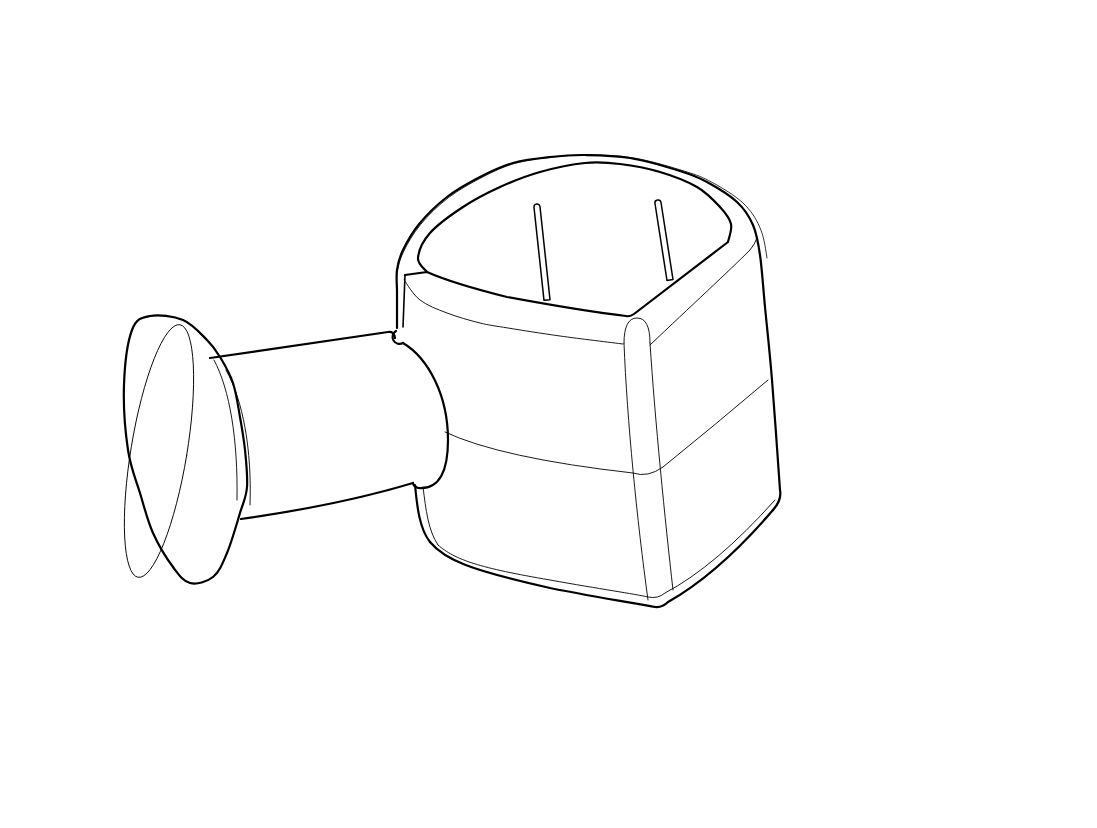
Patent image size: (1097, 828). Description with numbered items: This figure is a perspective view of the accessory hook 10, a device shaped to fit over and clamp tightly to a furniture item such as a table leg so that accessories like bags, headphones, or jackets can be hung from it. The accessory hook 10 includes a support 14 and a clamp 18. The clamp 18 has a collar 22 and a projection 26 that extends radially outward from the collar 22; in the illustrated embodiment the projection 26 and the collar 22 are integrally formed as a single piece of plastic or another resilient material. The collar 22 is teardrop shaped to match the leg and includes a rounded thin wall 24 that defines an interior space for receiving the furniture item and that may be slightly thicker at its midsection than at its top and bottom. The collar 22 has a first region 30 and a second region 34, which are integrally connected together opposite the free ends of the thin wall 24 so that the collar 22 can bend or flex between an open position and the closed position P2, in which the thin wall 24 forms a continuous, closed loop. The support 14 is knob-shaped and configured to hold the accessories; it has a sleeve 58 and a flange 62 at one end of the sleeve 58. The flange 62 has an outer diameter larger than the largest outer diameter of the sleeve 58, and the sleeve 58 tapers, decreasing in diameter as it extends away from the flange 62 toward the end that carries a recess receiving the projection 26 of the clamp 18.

The accessory hook 10 is at (678, 75).
The support 14 is at (133, 285).
The clamp 18 is at (770, 557).
The collar 22 is at (447, 517).
The thin wall 24 is at (740, 237).
The projection 26 is at (398, 327).
The first region 30 is at (512, 197).
The second region 34 is at (593, 572).
The sleeve 58 is at (288, 343).
The flange 62 is at (133, 468).
The closed position P2 is at (805, 408).